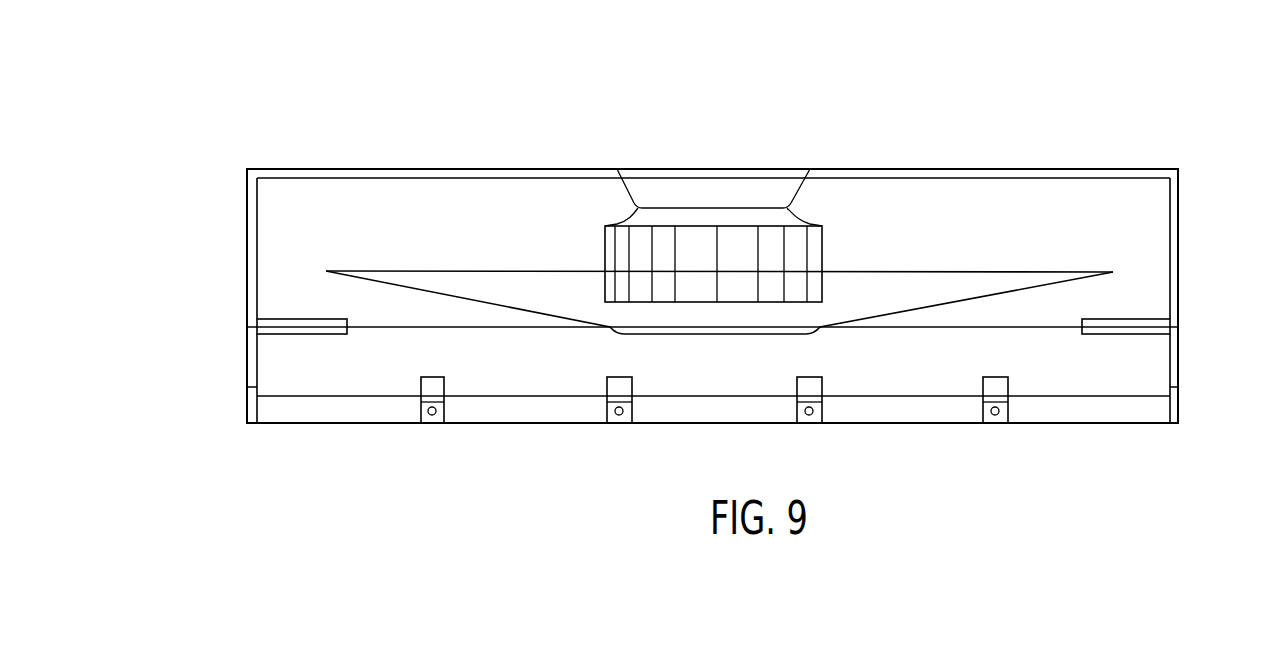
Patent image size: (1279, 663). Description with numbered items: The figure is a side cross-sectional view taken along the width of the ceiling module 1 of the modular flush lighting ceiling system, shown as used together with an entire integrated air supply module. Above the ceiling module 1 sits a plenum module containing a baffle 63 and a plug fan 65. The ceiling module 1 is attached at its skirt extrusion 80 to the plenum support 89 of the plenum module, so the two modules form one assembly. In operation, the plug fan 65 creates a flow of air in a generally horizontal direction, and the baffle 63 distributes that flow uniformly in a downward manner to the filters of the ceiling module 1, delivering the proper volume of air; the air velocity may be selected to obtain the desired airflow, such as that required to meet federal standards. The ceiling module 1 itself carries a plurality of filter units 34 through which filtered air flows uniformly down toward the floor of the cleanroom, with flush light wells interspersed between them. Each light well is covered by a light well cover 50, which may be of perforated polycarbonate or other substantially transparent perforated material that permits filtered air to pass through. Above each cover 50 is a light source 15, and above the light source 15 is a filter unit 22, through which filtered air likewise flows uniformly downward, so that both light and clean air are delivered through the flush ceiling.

The ceiling module 1 is at (1200, 119).
The plenum support 89 is at (247, 209).
The skirt extrusion 80 is at (247, 343).
The plug fan 65 is at (775, 260).
The baffle 63 is at (838, 323).
The filter unit 22 is at (421, 388).
The light source 15 is at (433, 415).
The filter unit 34 is at (560, 424).
The light well cover 50 is at (990, 424).